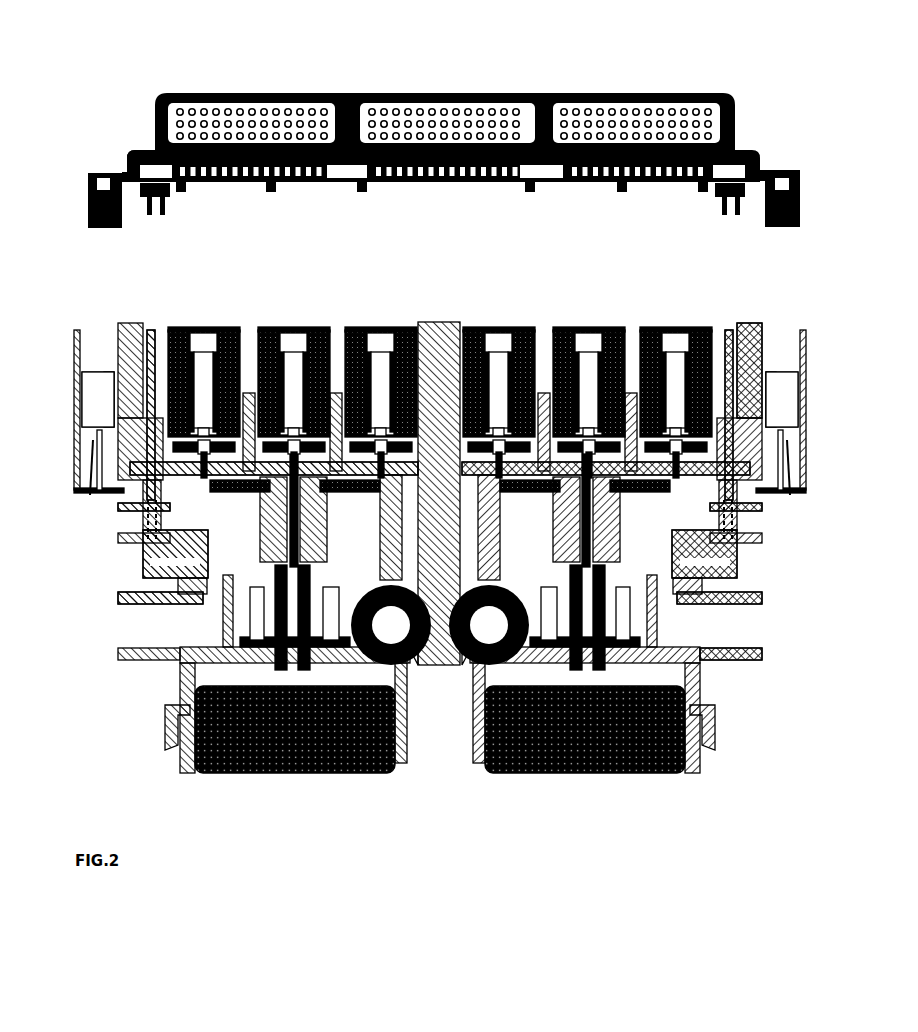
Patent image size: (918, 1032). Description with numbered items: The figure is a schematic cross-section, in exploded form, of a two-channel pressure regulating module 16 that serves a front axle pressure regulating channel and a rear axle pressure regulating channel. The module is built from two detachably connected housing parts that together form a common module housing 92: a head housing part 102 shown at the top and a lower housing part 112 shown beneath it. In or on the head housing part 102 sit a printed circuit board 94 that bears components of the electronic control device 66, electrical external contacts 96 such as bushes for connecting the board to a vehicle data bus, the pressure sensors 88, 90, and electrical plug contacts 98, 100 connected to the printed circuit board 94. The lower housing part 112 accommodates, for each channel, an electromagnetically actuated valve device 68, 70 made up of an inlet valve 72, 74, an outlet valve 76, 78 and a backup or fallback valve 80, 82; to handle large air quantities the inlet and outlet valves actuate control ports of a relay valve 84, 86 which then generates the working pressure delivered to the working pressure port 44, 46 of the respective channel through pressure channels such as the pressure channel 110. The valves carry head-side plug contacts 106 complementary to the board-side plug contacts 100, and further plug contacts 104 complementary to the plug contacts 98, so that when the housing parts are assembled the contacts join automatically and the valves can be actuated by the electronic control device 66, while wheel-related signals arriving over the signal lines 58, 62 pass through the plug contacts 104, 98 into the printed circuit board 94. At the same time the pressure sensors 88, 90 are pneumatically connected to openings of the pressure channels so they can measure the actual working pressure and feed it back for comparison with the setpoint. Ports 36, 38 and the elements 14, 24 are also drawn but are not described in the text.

The 2-channel pressure regulating module 16 is at (163, 66).
The housing part 102 is at (131, 151).
The common module housing 92 is at (733, 150).
The printed circuit board 94 is at (224, 183).
The electrical external contacts 96 is at (362, 182).
The electrical plug contacts 100 is at (181, 196).
The pressure sensor 90 is at (158, 208).
The electronic control device 66 is at (280, 205).
The pressure sensor 88 is at (732, 203).
The electrical plug contacts 98 is at (100, 230).
The electromagnetically actuated valve device 70 is at (325, 310).
The electromagnetically actuated valve device 68 is at (604, 305).
The electrical plug contacts 104 is at (98, 372).
The electrical plug contacts 106 is at (178, 326).
The backup or fallback valve 82 is at (213, 327).
The outlet valve 78 is at (320, 327).
The inlet valve 74 is at (392, 327).
The inlet valve 72 is at (493, 327).
The outlet valve 76 is at (586, 327).
The backup or fallback valve 80 is at (673, 327).
The signal line 62 is at (92, 452).
The signal line 58 is at (102, 441).
The pressure channel 110 is at (150, 453).
The fluid port 38 is at (140, 521).
The fluid port 36 is at (740, 521).
The relay valve 86 is at (256, 542).
The relay valve 84 is at (625, 543).
The working pressure port 46 is at (160, 623).
The working pressure port 44 is at (722, 627).
The lower housing part 112 is at (740, 665).
The first pump 14 is at (392, 628).
The second pump 24 is at (489, 628).